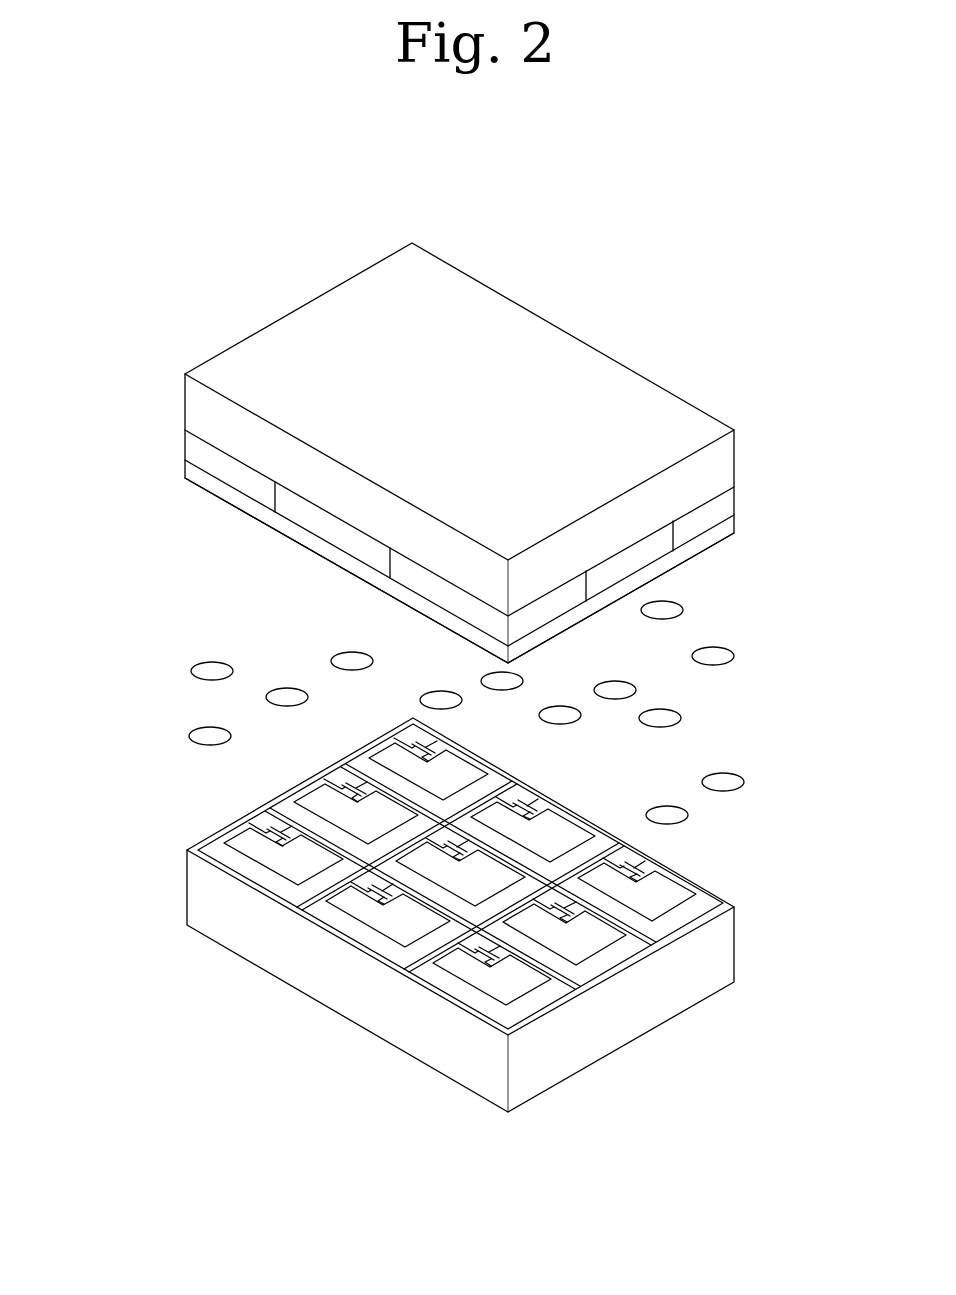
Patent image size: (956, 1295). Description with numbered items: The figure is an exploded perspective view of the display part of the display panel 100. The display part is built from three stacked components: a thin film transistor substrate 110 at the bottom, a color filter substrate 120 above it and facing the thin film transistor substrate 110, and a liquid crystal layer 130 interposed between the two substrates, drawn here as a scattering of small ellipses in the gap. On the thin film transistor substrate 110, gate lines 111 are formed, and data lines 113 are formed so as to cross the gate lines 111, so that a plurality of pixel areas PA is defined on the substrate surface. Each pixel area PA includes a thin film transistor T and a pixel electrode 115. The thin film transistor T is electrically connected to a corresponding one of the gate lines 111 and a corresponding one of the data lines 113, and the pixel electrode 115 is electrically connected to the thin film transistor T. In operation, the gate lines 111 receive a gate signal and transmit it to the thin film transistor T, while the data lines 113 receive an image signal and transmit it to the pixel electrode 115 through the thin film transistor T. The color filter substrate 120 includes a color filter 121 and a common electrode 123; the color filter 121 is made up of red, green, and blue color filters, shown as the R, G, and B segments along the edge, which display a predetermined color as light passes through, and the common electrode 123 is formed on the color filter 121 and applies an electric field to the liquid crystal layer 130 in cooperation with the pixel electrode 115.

The display panel 100 is at (135, 219).
The thin film transistor substrate 110 is at (497, 915).
The gate lines 111 is at (312, 830).
The data lines 113 is at (333, 893).
The pixel electrode 115 is at (255, 888).
The thin film transistor T is at (245, 815).
The pixel area PA is at (675, 900).
The color filter substrate 120 is at (458, 453).
The color filter 121 is at (195, 446).
The common electrode 123 is at (193, 472).
The liquid crystal layer 130 is at (752, 545).